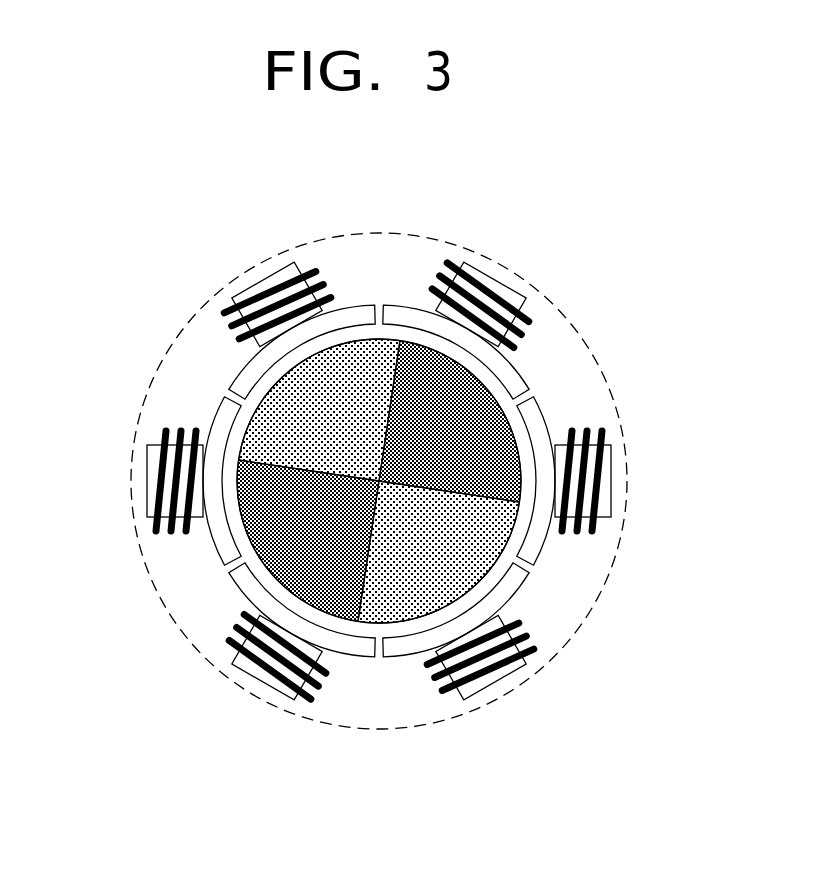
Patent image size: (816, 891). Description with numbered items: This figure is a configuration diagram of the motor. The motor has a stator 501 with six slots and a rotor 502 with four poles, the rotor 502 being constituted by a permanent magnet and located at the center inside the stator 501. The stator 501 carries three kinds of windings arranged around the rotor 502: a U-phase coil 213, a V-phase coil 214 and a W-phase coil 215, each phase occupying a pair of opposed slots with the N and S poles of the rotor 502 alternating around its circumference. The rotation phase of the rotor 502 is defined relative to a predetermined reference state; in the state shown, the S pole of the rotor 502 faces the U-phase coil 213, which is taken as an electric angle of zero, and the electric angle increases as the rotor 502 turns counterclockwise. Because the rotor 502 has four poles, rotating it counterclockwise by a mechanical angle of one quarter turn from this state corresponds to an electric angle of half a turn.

The stator 501 is at (382, 236).
The rotor 502 is at (483, 432).
The U-phase coil 213 is at (247, 273).
The V-phase coil 214 is at (492, 282).
The W-phase coil 215 is at (611, 477).